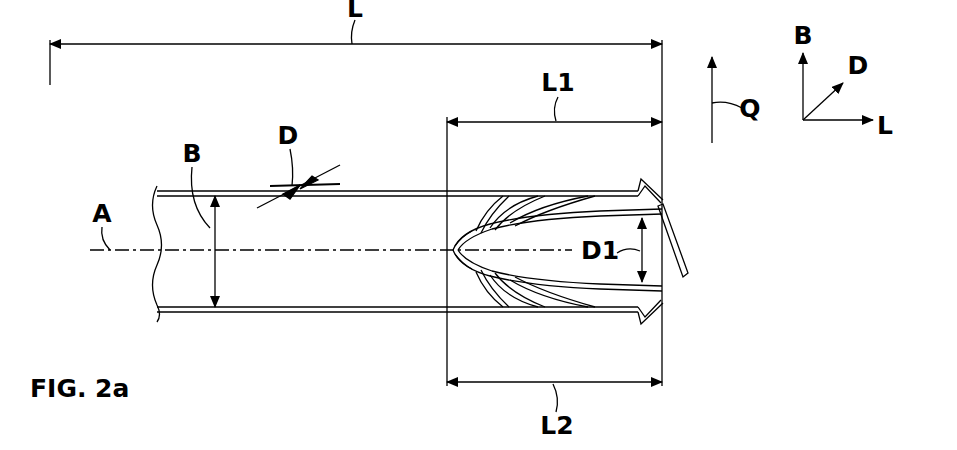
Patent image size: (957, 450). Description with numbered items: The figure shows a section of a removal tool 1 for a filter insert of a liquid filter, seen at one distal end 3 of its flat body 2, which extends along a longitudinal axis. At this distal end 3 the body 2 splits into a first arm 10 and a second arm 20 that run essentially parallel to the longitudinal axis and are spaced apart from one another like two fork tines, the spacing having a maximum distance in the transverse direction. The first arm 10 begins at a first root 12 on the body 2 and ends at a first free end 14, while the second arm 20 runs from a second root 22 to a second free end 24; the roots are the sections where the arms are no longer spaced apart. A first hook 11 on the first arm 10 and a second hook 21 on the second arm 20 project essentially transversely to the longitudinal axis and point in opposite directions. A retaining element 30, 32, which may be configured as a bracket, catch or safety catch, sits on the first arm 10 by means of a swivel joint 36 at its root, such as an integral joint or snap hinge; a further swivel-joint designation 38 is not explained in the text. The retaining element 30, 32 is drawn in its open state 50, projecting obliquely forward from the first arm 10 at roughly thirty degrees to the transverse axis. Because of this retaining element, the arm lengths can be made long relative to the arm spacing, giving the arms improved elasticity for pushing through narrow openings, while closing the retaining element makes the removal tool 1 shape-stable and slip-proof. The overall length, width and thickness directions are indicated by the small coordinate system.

The removal tool 1 is at (155, 106).
The body 2 is at (285, 283).
The distal end 3 is at (692, 322).
The first arm 10 is at (590, 205).
The first root 12 is at (447, 218).
The second arm 20 is at (583, 292).
The second root 22 is at (447, 285).
The first hook 11 is at (725, 187).
The first free end 14 is at (662, 203).
The second hook 21 is at (725, 309).
The second free end 24 is at (662, 300).
The swivel joint 36 is at (632, 229).
The inner contact strip end 38 is at (662, 218).
The retaining element 30 is at (735, 241).
The bracket / catch / safety catch 32 is at (684, 262).
The open state / open position 50 is at (617, 253).